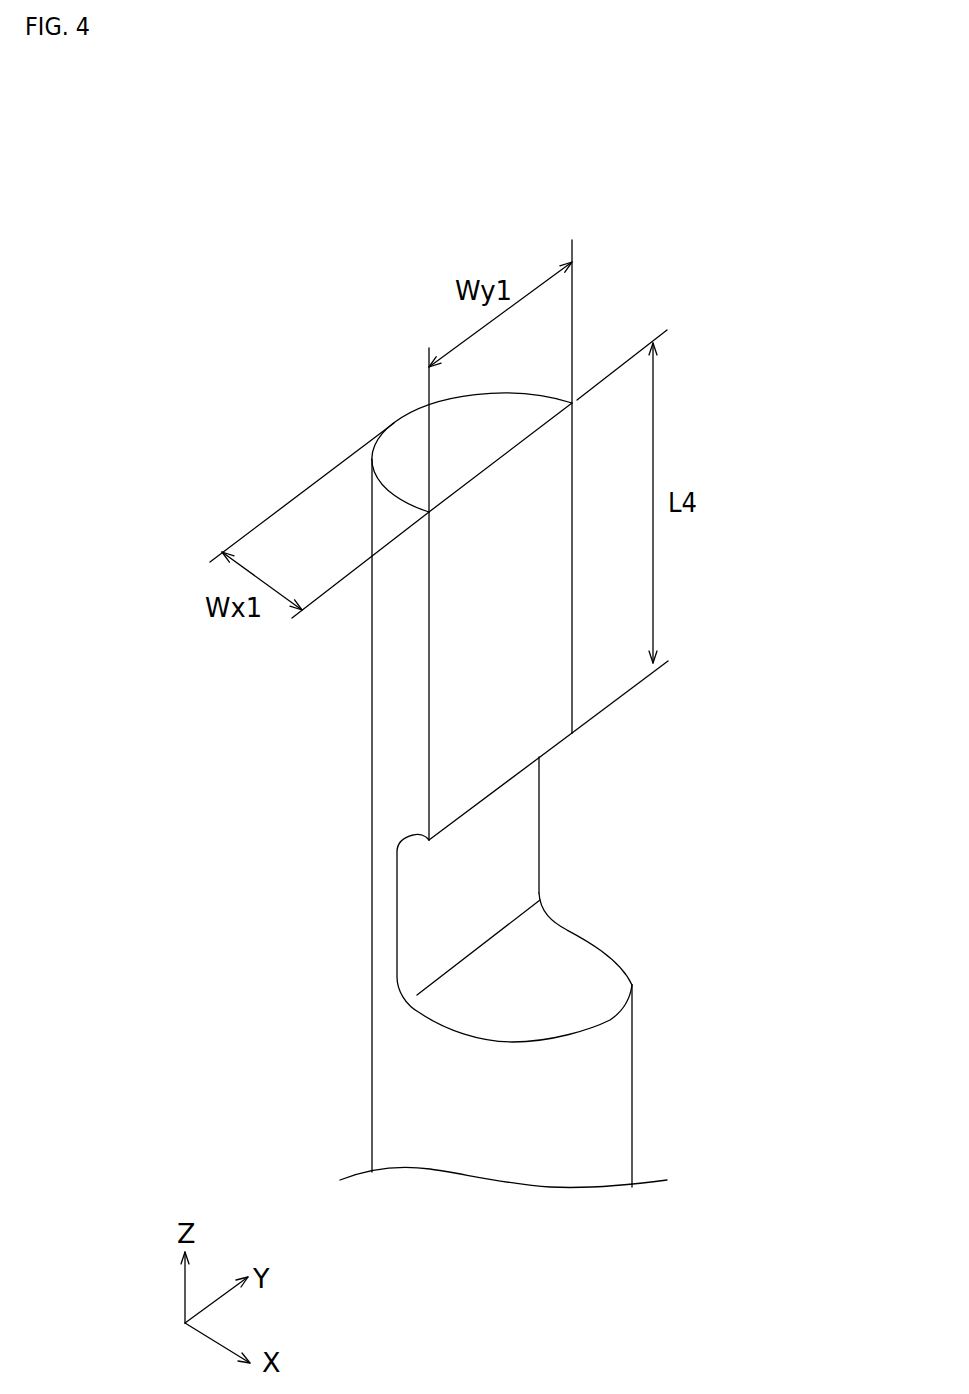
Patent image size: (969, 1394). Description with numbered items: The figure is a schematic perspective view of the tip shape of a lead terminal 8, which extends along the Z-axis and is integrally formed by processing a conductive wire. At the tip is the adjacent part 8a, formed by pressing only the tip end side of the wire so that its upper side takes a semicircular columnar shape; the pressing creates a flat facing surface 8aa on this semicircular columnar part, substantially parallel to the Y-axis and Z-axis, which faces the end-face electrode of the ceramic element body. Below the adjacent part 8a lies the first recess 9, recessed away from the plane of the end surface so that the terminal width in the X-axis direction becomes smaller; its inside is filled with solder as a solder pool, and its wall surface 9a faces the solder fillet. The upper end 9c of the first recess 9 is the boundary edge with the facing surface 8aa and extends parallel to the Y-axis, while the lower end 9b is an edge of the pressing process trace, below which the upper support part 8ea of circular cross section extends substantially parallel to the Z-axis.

The lead terminal 8 is at (521, 694).
The adjacent part 8a is at (402, 663).
The facing surface 8aa is at (465, 712).
The upper support part 8ea is at (590, 1119).
The first recess 9 is at (537, 899).
The wall surface 9a is at (503, 868).
The lower end 9b is at (633, 987).
The upper end 9c is at (497, 788).